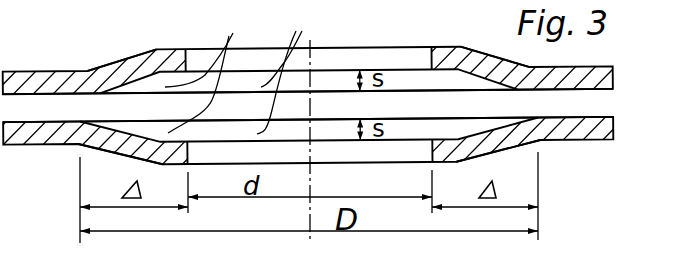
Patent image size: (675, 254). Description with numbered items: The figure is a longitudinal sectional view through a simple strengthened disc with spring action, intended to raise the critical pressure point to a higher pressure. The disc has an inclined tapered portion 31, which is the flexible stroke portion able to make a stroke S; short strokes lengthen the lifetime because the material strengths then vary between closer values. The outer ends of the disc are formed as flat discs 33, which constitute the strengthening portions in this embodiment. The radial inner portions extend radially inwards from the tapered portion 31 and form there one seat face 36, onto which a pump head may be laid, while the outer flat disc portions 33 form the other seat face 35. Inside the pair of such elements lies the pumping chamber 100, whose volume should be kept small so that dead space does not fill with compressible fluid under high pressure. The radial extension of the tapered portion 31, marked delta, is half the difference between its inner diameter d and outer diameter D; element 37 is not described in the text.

The tapered portion 31 is at (110, 75).
The flat discs 33 is at (40, 82).
The seat face 35 is at (49, 96).
The seat face 36 is at (171, 47).
The step of reduced wall section 37 is at (190, 66).
The pumping chamber 100 is at (250, 70).